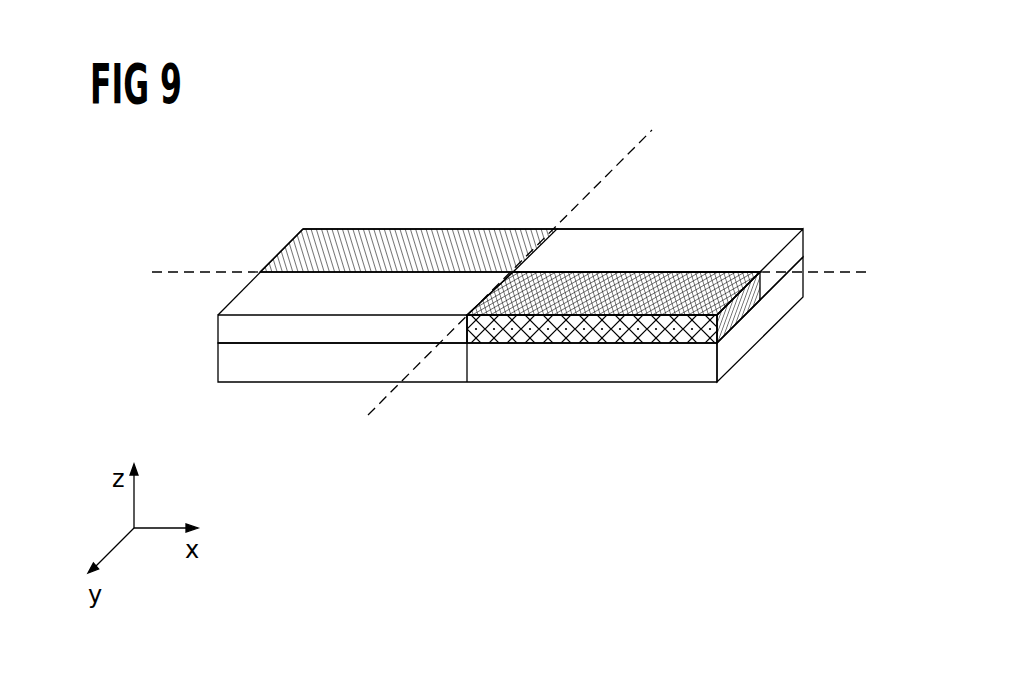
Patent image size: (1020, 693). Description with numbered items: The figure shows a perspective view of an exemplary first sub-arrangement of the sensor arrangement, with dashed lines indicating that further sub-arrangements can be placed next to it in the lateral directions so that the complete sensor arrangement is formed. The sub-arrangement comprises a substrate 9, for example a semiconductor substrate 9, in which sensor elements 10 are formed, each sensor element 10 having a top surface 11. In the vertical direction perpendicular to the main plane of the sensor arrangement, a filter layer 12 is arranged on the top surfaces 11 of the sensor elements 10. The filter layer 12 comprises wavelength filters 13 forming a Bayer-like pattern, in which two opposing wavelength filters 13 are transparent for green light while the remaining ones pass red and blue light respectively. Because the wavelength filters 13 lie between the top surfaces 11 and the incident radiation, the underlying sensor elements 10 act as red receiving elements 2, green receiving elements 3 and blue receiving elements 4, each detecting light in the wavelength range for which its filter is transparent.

The red receiving elements 2 is at (368, 200).
The green receiving elements 3 is at (698, 200).
The blue receiving elements 4 is at (688, 413).
The substrate 9 is at (682, 327).
The sensor elements 10 is at (792, 285).
The top surface 11 is at (222, 347).
The filter layer 12 is at (812, 281).
The wavelength filters 13 is at (795, 246).